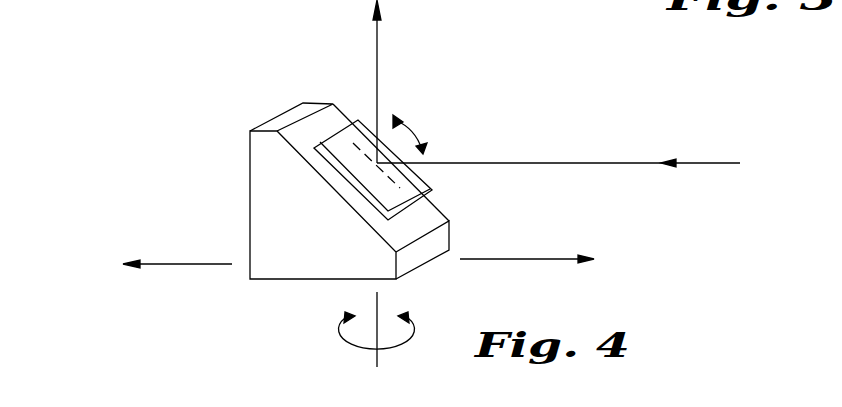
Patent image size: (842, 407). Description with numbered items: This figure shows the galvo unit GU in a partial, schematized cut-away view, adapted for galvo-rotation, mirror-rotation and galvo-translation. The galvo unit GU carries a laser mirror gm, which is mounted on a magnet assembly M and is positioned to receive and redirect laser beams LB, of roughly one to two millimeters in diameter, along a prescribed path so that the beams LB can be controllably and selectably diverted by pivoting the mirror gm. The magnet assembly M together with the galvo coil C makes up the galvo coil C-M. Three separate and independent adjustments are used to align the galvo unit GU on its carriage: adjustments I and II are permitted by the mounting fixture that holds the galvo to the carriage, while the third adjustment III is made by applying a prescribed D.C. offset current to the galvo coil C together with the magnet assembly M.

The magnet assembly M is at (197, 100).
The galvo coil C is at (250, 213).
The first adjustment I is at (338, 328).
The second adjustment II is at (125, 211).
The third adjustment III is at (375, 50).
The galvo unit GU is at (508, 76).
The laser beams LB is at (757, 148).
The laser mirror gm is at (535, 204).